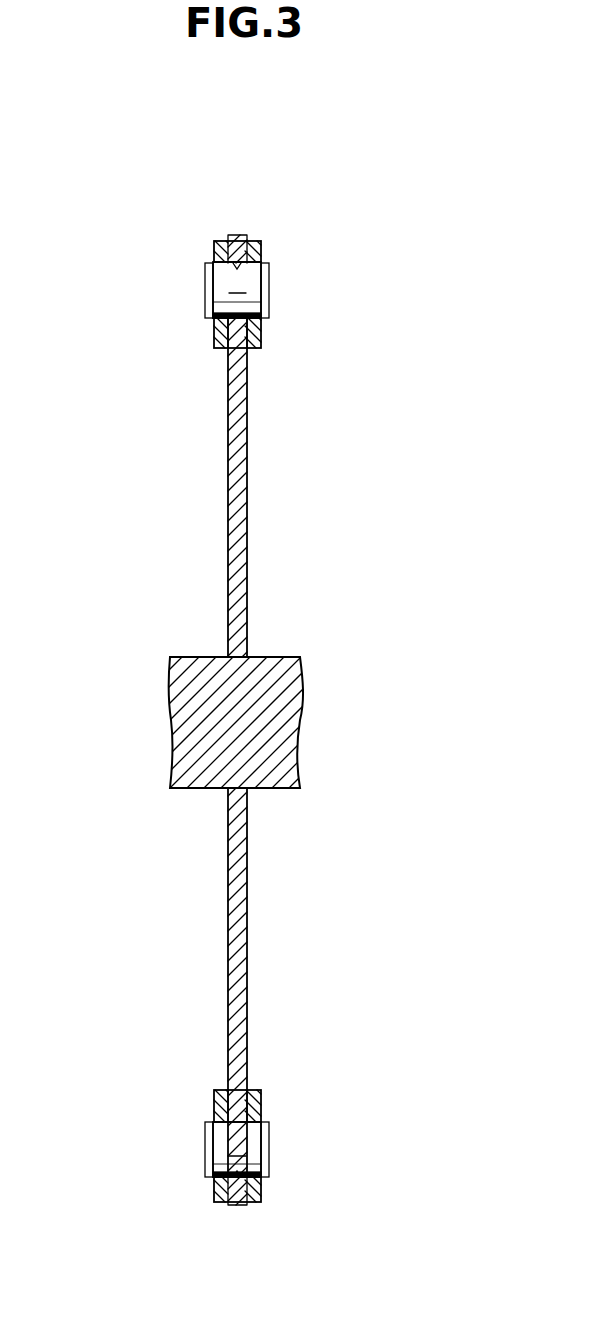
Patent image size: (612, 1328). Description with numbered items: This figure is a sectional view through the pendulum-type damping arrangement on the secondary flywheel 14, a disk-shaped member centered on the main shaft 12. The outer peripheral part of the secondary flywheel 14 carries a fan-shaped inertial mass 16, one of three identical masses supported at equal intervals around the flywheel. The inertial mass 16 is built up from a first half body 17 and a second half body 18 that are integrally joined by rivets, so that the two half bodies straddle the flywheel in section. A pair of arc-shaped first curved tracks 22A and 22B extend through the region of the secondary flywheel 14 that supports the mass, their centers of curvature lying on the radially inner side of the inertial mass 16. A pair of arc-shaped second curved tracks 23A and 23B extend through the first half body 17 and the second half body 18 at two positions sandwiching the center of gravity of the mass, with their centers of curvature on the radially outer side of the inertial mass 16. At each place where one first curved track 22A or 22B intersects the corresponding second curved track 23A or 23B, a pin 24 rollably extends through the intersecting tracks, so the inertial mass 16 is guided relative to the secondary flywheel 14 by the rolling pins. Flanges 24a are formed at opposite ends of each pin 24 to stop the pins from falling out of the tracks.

The main shaft 12 is at (197, 660).
The secondary flywheel 14 is at (236, 458).
The inertial mass 16 is at (260, 727).
The first half body 17 is at (258, 333).
The second half body 18 is at (222, 345).
The first curved track 22A is at (238, 266).
The first curved track 22B is at (236, 1193).
The second curved track 23A is at (207, 276).
The second curved track 23B is at (262, 1175).
The pin 24 is at (237, 719).
The flange 24a is at (263, 289).